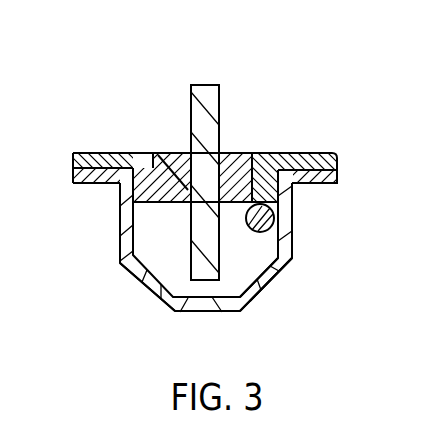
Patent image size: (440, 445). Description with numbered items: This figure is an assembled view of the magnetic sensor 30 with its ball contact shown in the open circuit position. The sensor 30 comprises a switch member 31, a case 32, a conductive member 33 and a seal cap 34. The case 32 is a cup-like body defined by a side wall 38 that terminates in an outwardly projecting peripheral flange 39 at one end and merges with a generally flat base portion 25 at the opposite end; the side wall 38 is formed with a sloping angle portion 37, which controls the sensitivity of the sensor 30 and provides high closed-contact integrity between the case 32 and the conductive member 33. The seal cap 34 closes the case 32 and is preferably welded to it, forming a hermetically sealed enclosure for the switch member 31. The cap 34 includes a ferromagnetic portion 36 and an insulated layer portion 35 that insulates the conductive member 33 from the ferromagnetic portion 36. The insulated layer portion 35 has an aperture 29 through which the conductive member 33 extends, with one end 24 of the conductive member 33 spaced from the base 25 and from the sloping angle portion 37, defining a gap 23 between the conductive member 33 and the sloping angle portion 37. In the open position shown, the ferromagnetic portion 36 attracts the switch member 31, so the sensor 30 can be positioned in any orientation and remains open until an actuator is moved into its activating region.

The magnetic sensor 30 is at (127, 58).
The gap 23 is at (220, 300).
The end of the conductive member 24 is at (175, 298).
The base portion 25 is at (197, 313).
The aperture 29 is at (194, 153).
The switch member 31 is at (294, 253).
The case 32 is at (264, 304).
The conductive member 33 is at (207, 93).
The seal cap 34 is at (329, 149).
The insulated layer portion 35 is at (238, 160).
The ferromagnetic portion 36 is at (287, 153).
The sloping angle portion 37 is at (283, 275).
The side wall 38 is at (282, 213).
The peripheral flange 39 is at (322, 184).